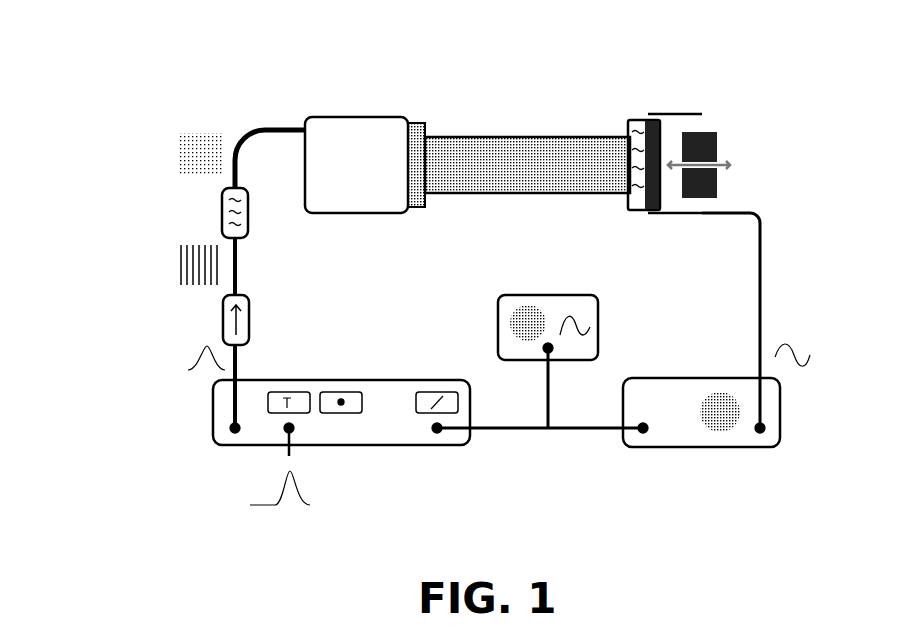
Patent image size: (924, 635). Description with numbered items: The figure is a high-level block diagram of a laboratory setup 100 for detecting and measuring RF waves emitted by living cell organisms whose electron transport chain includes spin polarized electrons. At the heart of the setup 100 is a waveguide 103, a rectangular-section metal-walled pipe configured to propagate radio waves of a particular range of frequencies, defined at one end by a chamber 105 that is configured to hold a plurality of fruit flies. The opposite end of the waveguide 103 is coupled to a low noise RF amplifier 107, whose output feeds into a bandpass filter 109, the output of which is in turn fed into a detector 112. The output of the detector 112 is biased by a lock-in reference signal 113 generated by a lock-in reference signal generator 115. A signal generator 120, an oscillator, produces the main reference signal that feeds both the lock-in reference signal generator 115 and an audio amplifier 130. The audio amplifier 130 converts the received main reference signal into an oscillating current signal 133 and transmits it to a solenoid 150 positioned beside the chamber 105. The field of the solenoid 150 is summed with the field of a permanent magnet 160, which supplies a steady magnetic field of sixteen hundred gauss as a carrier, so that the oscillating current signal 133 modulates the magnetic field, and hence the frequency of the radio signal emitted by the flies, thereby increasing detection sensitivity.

The setup 100 is at (390, 46).
The waveguide 103 is at (560, 143).
The chamber 105 is at (625, 132).
The low noise RF amplifier 107 is at (355, 128).
The bandpass filter 109 is at (222, 191).
The detector 112 is at (223, 297).
The lock-in reference signal 113 is at (297, 513).
The lock-in reference signal generator 115 is at (262, 431).
The signal generator 120 is at (513, 302).
The audio amplifier 130 is at (688, 441).
The oscillating current signal 133 is at (763, 282).
The solenoid 150 is at (677, 112).
The permanent magnet 160 is at (717, 189).